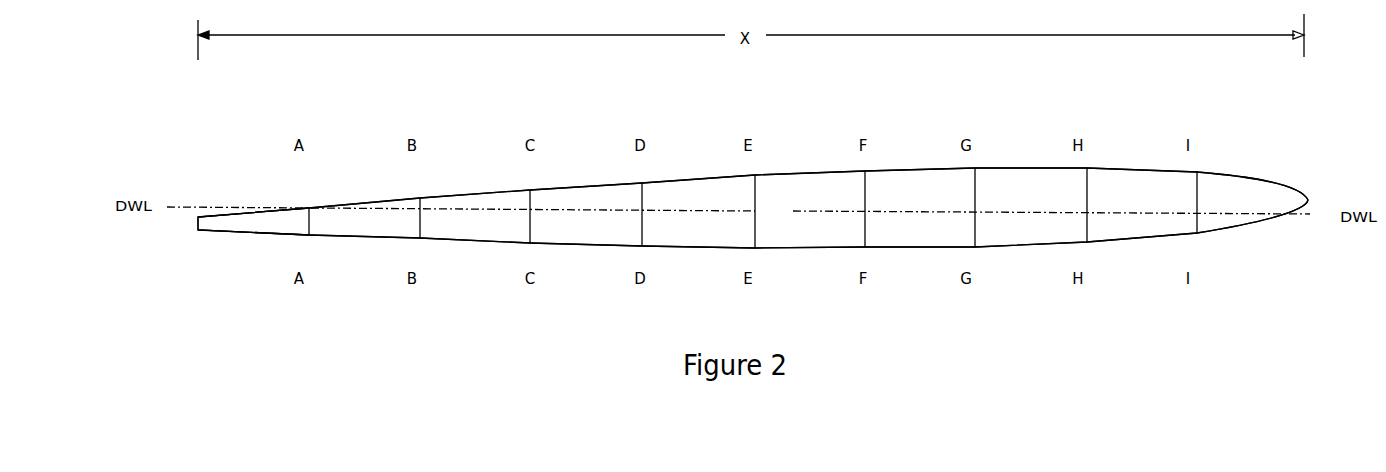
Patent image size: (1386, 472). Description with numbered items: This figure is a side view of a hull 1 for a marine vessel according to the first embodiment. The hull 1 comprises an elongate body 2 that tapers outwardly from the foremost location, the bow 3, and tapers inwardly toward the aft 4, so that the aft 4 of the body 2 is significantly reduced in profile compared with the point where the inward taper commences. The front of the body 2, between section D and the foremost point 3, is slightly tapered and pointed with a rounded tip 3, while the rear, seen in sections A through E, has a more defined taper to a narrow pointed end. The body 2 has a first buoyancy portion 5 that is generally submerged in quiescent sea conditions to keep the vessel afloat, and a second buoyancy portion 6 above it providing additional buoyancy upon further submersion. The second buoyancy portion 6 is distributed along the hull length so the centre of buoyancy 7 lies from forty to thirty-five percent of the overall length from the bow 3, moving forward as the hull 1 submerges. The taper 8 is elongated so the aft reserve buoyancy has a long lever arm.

The hull 1 is at (1254, 299).
The elongate body 2 is at (738, 211).
The bow 3 is at (1289, 182).
The aft 4 is at (194, 253).
The first buoyancy portion 5 is at (618, 236).
The second buoyancy portion 6 is at (1015, 179).
The centre of buoyancy 7 is at (882, 179).
The taper 8 is at (454, 197).